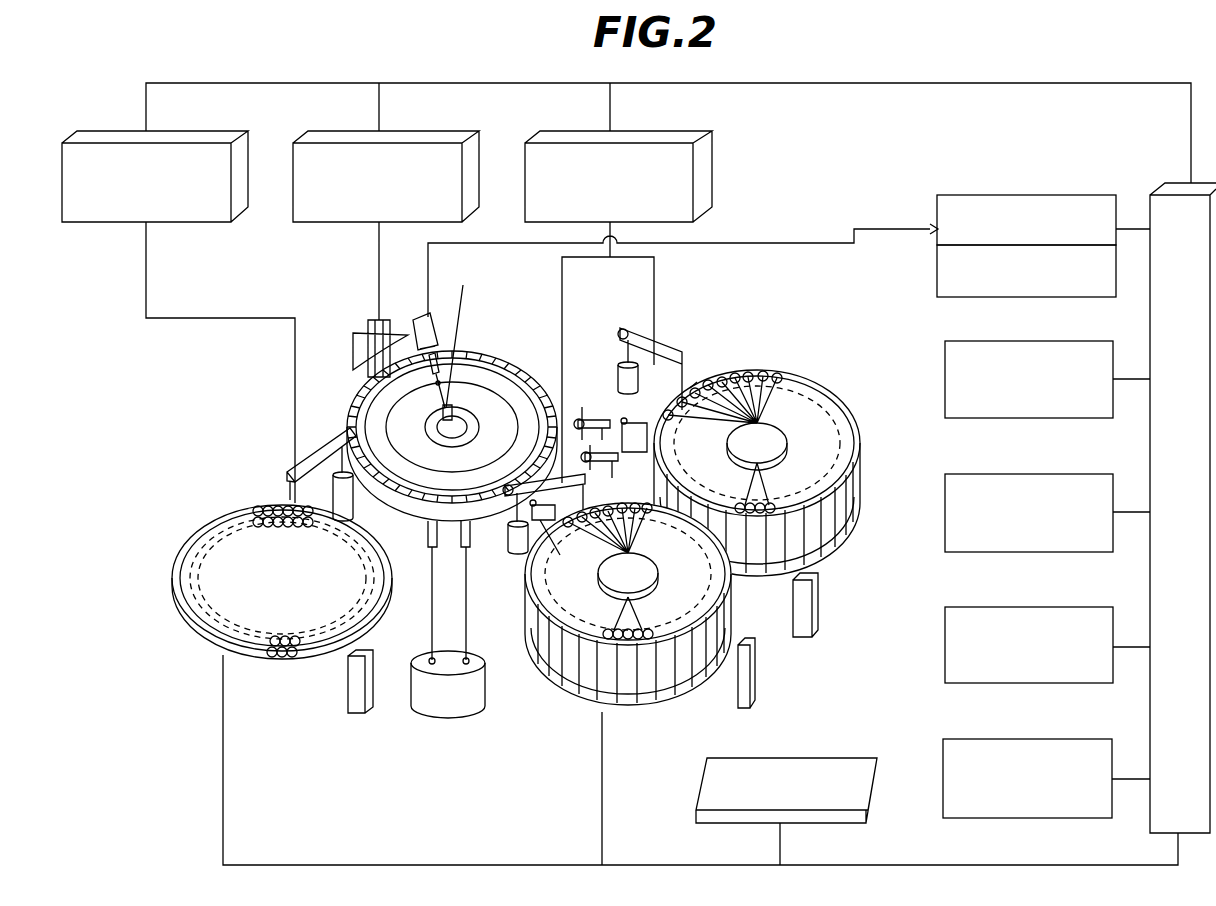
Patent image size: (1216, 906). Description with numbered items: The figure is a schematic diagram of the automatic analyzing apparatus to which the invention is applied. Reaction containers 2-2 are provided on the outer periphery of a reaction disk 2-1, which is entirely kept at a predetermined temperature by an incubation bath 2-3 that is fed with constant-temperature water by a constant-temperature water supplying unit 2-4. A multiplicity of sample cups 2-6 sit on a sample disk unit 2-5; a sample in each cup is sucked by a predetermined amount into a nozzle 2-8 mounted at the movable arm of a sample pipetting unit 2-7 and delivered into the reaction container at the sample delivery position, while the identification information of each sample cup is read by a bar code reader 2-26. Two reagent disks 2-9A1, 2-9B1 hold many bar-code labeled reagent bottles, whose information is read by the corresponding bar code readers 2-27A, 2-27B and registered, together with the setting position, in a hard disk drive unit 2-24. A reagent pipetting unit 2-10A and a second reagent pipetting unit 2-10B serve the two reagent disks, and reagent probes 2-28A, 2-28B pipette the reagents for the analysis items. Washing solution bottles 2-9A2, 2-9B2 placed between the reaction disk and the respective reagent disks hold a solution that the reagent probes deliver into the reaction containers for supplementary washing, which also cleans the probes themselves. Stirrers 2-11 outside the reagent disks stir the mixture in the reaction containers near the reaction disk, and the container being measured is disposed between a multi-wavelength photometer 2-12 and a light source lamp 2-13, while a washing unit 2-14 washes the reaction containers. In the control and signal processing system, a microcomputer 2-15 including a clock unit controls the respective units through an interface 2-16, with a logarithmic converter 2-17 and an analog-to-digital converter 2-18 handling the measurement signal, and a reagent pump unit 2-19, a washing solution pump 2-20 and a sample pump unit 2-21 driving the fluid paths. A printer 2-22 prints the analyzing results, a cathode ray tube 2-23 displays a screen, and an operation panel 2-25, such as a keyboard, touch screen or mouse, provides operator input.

The reaction disk 2-1 is at (520, 373).
The reaction containers 2-2 is at (397, 394).
The incubation bath 2-3 is at (407, 507).
The constant-temperature water supplying unit 2-4 is at (425, 697).
The sample disk unit 2-5 is at (275, 665).
The sample cups 2-6 is at (262, 505).
The sample pipetting unit 2-7 is at (320, 445).
The nozzle 2-8 is at (288, 503).
The reagent disk 2-9A1 is at (648, 688).
The washing solution bottle 2-9A2 is at (540, 505).
The reagent disk 2-9B1 is at (842, 522).
The washing solution bottle 2-9B2 is at (640, 373).
The reagent pipetting unit 2-10A is at (512, 552).
The second reagent pipetting unit 2-10B is at (640, 375).
The stirrers 2-11 is at (598, 420).
The multi-wavelength photometer 2-12 is at (414, 318).
The light source lamp 2-13 is at (471, 340).
The washing unit 2-14 is at (360, 325).
The microcomputer 2-15 is at (1033, 341).
The interface 2-16 is at (1162, 188).
The logarithmic converter 2-17 is at (1033, 195).
The analog-to-digital converter 2-18 is at (988, 297).
The reagent pump unit 2-19 is at (657, 131).
The washing solution pump 2-20 is at (430, 131).
The sample pump unit 2-21 is at (190, 131).
The printer 2-22 is at (1033, 474).
The cathode ray tube 2-23 is at (1033, 607).
The hard disk drive unit 2-24 is at (1033, 739).
The operation panel 2-25 is at (833, 760).
The bar code reader 2-26 is at (352, 690).
The bar code reader 2-27A is at (752, 685).
The bar code reader 2-27B is at (812, 625).
The reagent probe 2-28A is at (572, 418).
The reagent probe 2-28B is at (697, 382).